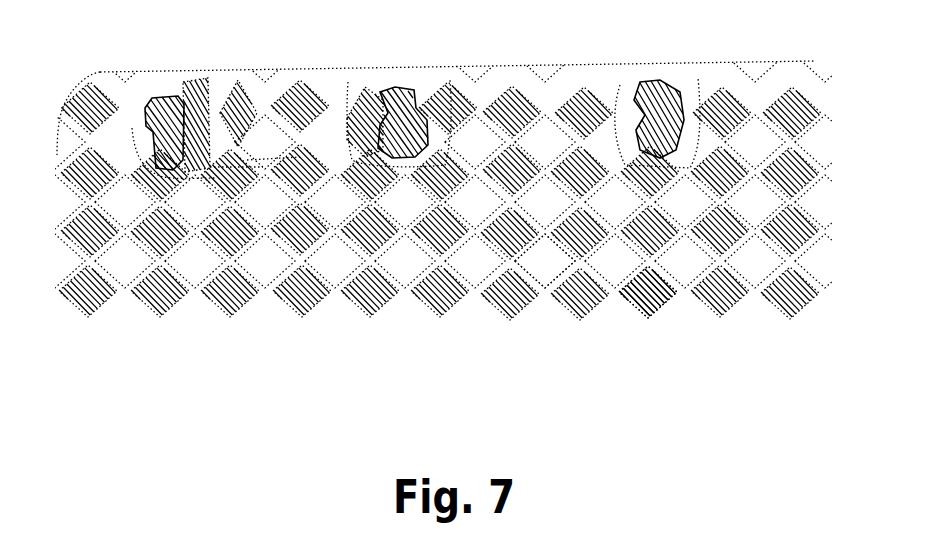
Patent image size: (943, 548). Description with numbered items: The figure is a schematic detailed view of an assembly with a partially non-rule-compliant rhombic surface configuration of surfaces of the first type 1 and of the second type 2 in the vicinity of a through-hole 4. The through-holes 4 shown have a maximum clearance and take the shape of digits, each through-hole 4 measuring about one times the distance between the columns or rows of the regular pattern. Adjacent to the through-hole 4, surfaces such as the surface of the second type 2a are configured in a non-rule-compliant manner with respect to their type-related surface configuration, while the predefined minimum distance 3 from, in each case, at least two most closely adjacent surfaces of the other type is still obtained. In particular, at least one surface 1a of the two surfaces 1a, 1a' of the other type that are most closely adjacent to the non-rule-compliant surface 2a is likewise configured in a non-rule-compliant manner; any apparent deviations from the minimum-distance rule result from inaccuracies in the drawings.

The surface of the first type 1 is at (762, 285).
The surface of the other type 1a is at (234, 83).
The surface of the other type 1a' is at (294, 83).
The surface of the second type 2 is at (660, 312).
The non-rule-compliant surface of the second type 2a is at (210, 130).
The predefined minimum distance 3 is at (550, 290).
The through-hole 4 is at (403, 95).